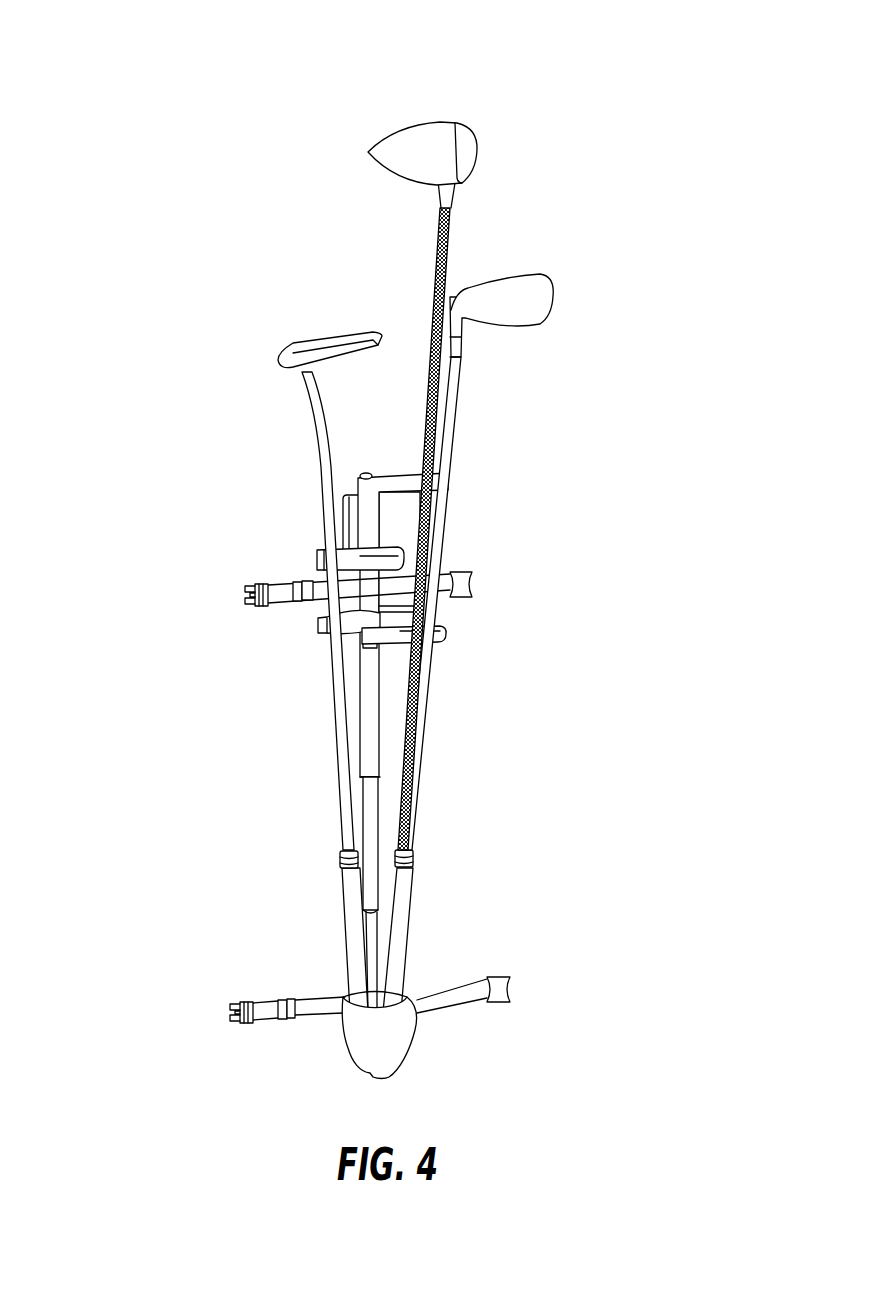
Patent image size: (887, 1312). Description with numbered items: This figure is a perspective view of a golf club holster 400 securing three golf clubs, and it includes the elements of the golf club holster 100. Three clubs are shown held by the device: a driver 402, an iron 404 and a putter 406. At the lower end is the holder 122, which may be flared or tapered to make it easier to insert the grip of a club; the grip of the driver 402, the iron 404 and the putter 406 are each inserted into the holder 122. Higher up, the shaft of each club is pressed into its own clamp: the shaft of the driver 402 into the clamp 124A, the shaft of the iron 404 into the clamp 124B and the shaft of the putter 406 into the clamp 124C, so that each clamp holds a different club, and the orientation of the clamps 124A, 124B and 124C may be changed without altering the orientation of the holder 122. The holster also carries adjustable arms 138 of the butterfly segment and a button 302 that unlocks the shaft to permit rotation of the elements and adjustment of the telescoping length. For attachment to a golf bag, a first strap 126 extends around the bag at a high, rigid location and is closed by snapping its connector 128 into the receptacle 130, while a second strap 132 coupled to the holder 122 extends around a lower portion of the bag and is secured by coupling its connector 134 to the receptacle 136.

The golf club holster 400 is at (88, 31).
The golf club holster 100 is at (283, 475).
The driver 402 is at (387, 135).
The iron 404 is at (527, 275).
The putter 406 is at (297, 342).
The button 302 is at (366, 472).
The clamp 124A is at (403, 481).
The clamp 124B is at (447, 640).
The clamp 124C is at (317, 626).
The adjustable arms 138 is at (317, 555).
The first strap 126 is at (292, 583).
The connector 128 is at (243, 587).
The receptacle 130 is at (472, 577).
The second strap 132 is at (288, 1000).
The connector 134 is at (233, 1003).
The receptacle 136 is at (493, 977).
The holder 122 is at (400, 1047).